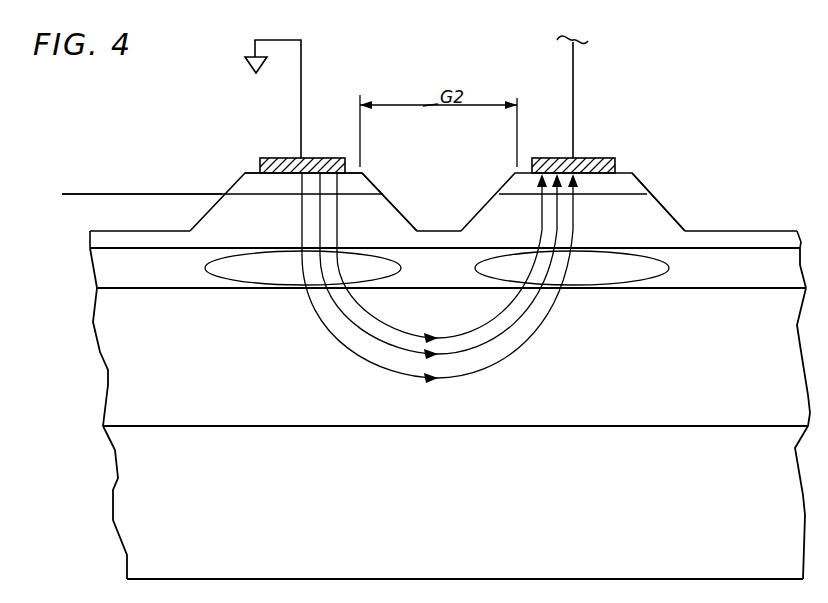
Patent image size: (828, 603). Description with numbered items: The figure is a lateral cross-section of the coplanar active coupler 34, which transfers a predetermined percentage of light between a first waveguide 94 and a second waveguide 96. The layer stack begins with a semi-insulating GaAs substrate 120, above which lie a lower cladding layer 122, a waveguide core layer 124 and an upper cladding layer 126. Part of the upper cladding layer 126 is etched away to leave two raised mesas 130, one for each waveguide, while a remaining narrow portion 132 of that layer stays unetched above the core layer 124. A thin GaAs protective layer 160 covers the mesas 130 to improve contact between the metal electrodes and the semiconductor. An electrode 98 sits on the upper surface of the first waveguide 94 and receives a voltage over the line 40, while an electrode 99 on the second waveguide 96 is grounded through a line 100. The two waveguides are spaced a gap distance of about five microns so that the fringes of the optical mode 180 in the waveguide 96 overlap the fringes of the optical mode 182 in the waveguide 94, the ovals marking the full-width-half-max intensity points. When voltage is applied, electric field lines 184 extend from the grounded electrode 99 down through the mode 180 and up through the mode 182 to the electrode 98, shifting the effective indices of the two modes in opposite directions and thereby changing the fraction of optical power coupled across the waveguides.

The active coupler 34 is at (115, 149).
The line 40 is at (576, 73).
The first waveguide 94 is at (656, 199).
The second waveguide 96 is at (390, 200).
The electrode 98 is at (598, 157).
The electrode 99 is at (269, 159).
The line 100 is at (300, 100).
The substrate 120 is at (137, 504).
The lower cladding layer 122 is at (115, 353).
The waveguide core layer 124 is at (102, 271).
The upper cladding layer 126 is at (88, 248).
The mesa 130 is at (216, 219).
The remaining narrow portion 132 is at (91, 244).
The protective layer 160 is at (240, 182).
The optical mode 180 is at (225, 285).
The optical mode 182 is at (617, 287).
The electric field lines 184 is at (458, 379).